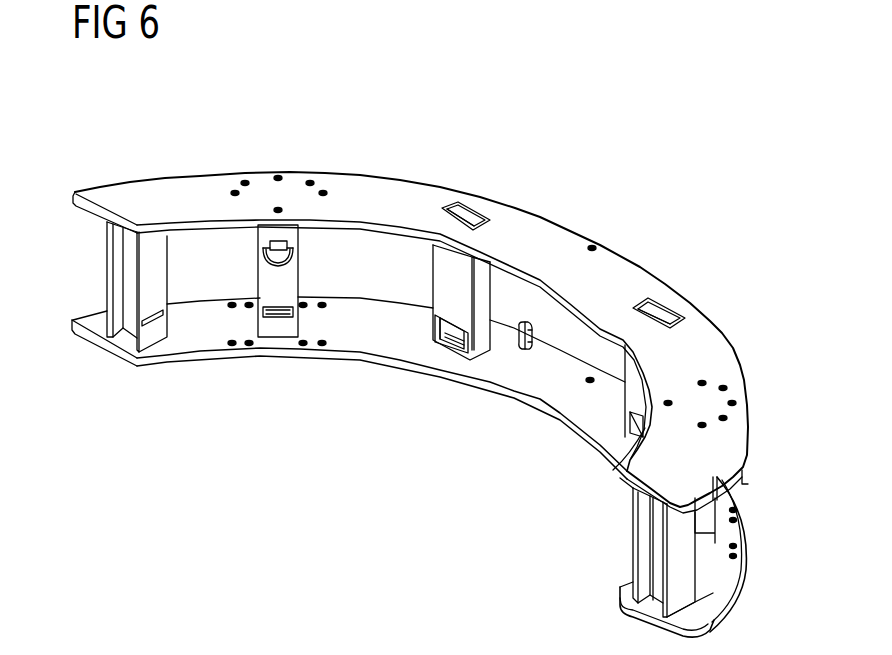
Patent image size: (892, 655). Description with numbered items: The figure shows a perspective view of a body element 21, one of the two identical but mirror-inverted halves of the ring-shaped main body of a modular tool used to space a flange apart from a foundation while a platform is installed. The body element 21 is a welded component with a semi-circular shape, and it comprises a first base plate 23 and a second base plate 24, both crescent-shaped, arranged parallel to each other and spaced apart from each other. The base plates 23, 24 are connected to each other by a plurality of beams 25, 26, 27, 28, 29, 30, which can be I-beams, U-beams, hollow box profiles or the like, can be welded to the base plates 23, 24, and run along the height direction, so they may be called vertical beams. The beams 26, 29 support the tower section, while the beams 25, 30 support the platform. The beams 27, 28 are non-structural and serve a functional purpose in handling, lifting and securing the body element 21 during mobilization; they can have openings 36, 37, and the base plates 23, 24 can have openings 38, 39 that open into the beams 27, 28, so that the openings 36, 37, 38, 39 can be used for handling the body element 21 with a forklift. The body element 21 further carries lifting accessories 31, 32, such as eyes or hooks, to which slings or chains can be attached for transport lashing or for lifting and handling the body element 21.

The first body element 21 is at (385, 110).
The first base plate 23 is at (540, 219).
The second base plate 24 is at (507, 398).
The beam 25 is at (148, 335).
The beam 26 is at (267, 277).
The beam 27 is at (440, 293).
The beam 28 is at (623, 405).
The beam 29 is at (717, 530).
The beam 30 is at (655, 603).
The lifting accessory 31 is at (293, 250).
The lifting accessory 32 is at (523, 323).
The opening 36 is at (440, 343).
The opening 37 is at (620, 472).
The opening 38 is at (670, 306).
The opening 39 is at (470, 210).